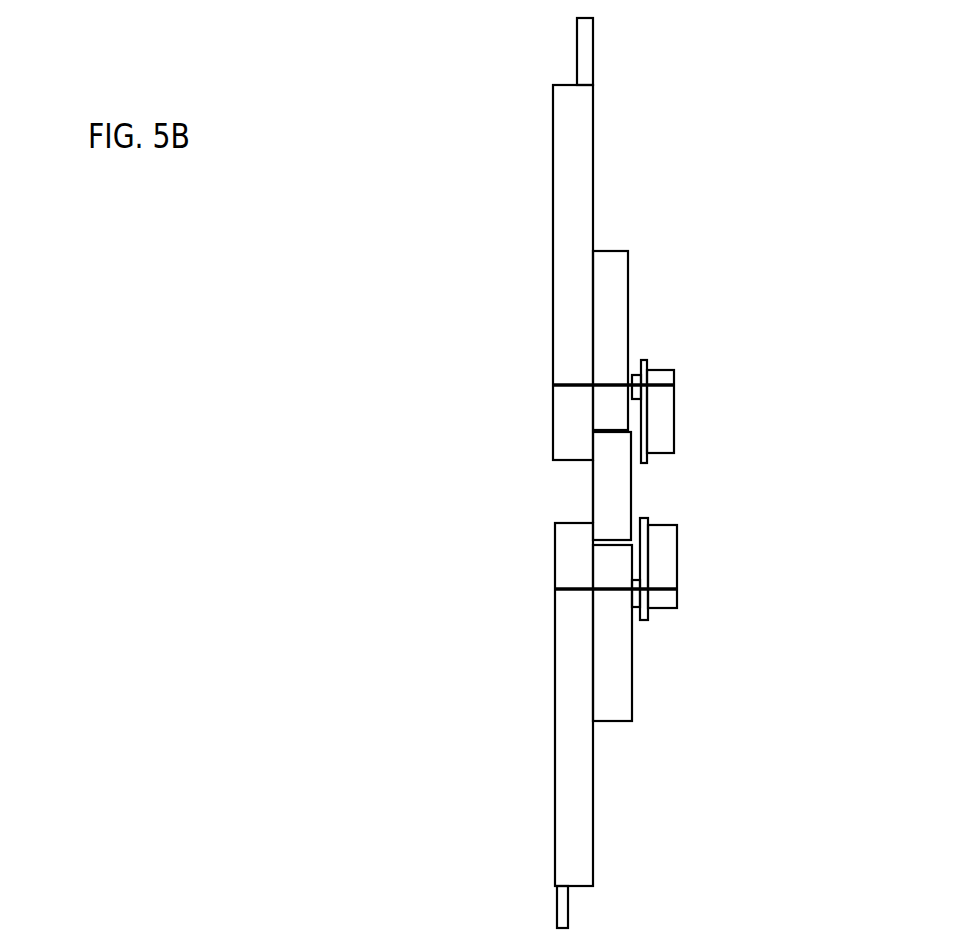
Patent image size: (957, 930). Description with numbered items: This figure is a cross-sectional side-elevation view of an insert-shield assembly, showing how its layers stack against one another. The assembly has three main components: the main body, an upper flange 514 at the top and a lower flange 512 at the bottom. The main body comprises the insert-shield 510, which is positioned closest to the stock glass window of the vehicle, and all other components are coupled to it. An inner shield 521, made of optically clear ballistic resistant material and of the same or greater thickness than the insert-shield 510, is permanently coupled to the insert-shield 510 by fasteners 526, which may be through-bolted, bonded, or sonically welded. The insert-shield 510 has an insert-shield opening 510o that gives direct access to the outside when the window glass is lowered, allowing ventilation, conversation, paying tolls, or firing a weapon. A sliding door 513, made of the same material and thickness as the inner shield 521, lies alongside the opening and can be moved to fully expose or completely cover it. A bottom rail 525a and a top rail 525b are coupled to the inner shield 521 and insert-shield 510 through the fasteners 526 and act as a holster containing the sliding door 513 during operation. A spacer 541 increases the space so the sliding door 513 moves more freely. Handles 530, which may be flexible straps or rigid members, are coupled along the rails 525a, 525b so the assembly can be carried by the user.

The insert-shield 510 is at (563, 152).
The insert-shield opening 510o is at (572, 492).
The lower flange 512 is at (568, 913).
The upper flange 514 is at (593, 53).
The sliding door 513 is at (622, 487).
The inner shield 521 is at (617, 266).
The bottom rail 525a is at (650, 515).
The top rail 525b is at (650, 362).
The fasteners 526 is at (553, 386).
The handles 530 is at (658, 405).
The spacer 541 is at (636, 377).